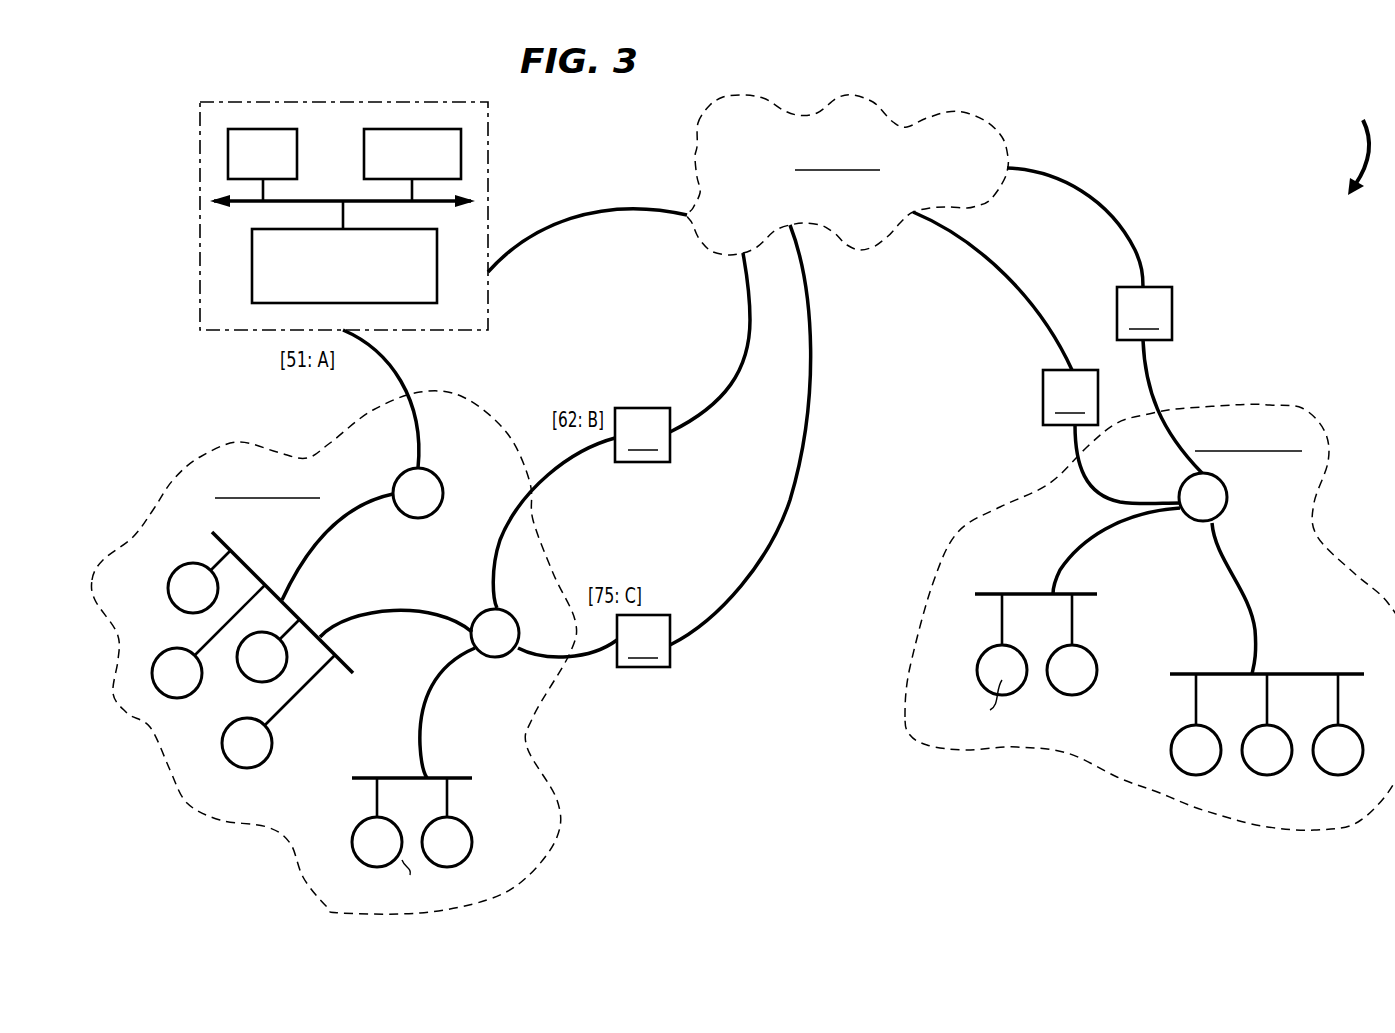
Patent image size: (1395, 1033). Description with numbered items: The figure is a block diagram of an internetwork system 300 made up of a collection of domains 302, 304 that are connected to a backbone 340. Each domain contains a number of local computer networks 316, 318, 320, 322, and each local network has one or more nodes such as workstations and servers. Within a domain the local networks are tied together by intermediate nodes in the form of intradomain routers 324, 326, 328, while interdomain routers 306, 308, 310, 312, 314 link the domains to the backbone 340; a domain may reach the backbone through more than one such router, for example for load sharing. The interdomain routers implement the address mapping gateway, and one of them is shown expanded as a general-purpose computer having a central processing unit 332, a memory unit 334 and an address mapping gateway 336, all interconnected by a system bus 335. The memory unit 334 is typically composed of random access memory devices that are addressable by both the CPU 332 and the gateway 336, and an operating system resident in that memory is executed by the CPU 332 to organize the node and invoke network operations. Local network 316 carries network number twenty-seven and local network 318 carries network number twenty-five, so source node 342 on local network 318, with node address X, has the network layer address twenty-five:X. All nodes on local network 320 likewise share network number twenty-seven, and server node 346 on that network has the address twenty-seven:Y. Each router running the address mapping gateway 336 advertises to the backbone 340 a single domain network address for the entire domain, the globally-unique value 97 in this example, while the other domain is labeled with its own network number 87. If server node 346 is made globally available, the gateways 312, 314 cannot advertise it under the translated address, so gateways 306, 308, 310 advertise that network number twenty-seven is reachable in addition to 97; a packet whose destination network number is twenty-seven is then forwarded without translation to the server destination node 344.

The internetwork system 300 is at (1362, 140).
The domain 302 is at (333, 652).
The domain 304 is at (1150, 617).
The interdomain router 306 is at (397, 102).
The interdomain router 308 is at (642, 435).
The interdomain router 310 is at (643, 641).
The interdomain router 312 is at (1070, 397).
The interdomain router 314 is at (1144, 313).
The local computer network 316 is at (247, 562).
The local computer network 318 is at (397, 778).
The local computer network 320 is at (1027, 594).
The local computer network 322 is at (1328, 674).
The intradomain router 324 is at (438, 482).
The intradomain router 326 is at (503, 660).
The intradomain router 328 is at (1228, 497).
The central processing unit 332 is at (245, 129).
The memory unit 334 is at (364, 147).
The system bus 335 is at (440, 203).
The address mapping gateway 336 is at (252, 272).
The backbone 340 is at (998, 134).
The source node 342 is at (352, 842).
The server destination node 344 is at (223, 742).
The server node 346 is at (1015, 692).
The backbone interface address 87 is at (752, 220).
The domain network address 97 is at (940, 185).